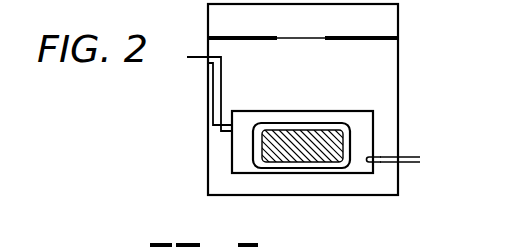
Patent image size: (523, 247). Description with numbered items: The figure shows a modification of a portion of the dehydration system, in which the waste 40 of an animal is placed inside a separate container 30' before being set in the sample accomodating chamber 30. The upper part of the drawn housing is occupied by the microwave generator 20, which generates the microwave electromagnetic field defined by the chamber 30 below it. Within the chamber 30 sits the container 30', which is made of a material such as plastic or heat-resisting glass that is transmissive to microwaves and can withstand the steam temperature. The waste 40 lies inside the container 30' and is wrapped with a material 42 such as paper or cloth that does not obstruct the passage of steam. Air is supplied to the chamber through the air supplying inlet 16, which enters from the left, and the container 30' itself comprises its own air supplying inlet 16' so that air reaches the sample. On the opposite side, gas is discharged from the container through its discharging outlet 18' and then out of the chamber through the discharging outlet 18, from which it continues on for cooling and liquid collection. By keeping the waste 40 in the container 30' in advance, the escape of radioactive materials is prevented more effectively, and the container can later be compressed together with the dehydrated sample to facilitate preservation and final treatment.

The air supplying inlet 16 is at (202, 94).
The air supplying inlet 16' is at (197, 106).
The discharging outlet 18 is at (422, 162).
The discharging outlet 18' is at (405, 143).
The microwave generator 20 is at (315, 32).
The sample accomodating chamber 30 is at (303, 99).
The container 30' is at (303, 87).
The waste 40 is at (350, 129).
The material 42 is at (285, 123).